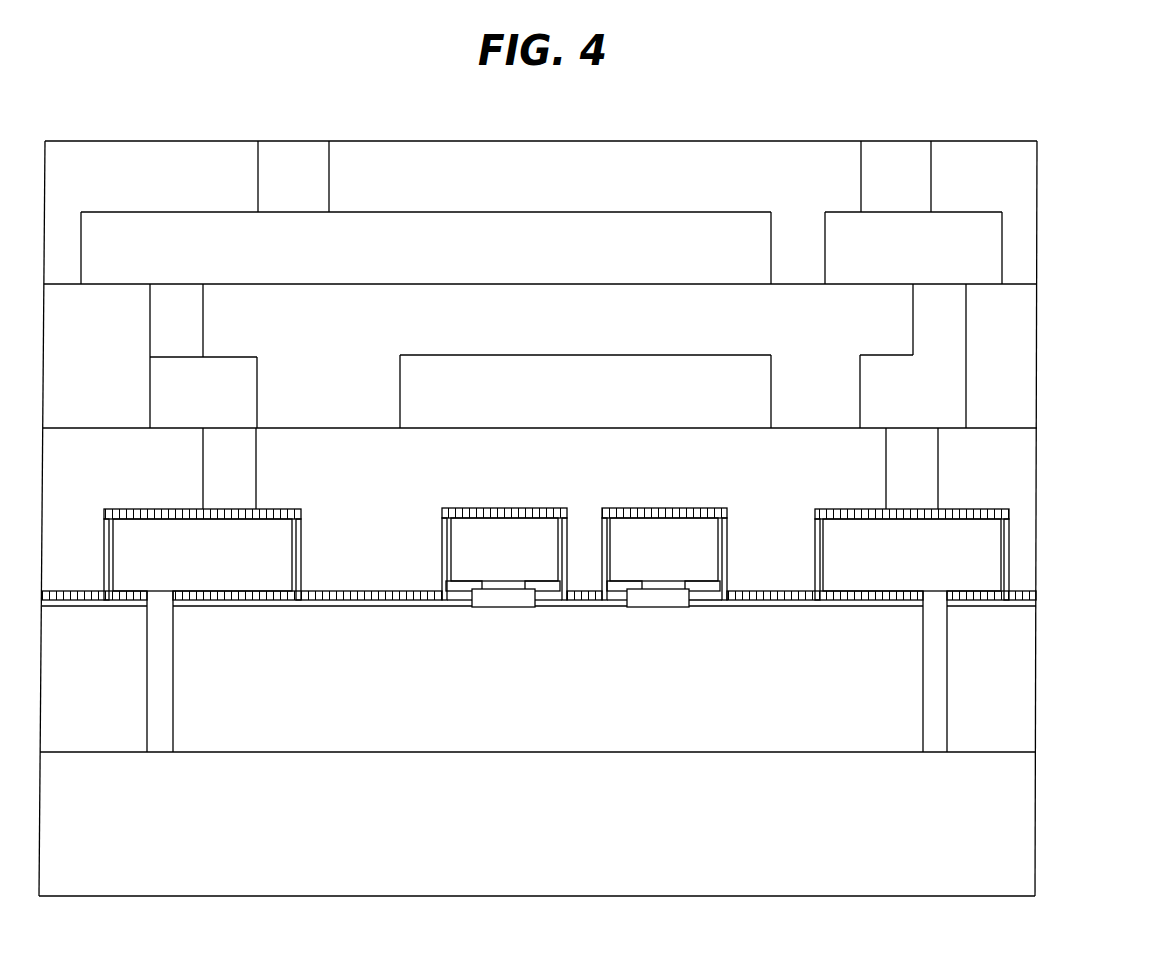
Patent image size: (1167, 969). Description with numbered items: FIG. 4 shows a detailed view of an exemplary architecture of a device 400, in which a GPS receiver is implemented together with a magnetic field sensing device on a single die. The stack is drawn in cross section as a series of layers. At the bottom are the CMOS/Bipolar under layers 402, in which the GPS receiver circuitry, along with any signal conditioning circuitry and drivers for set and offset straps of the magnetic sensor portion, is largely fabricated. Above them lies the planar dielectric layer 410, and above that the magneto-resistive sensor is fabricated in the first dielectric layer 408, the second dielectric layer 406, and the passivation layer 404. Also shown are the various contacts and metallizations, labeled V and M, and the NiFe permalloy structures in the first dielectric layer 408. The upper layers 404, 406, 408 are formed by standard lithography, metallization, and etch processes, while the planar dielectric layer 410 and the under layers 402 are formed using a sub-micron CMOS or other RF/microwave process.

The device 400 is at (1085, 97).
The CMOS/Bipolar under layers 402 is at (1048, 817).
The passivation layer 404 is at (1049, 206).
The second dielectric layer 406 is at (1050, 349).
The first dielectric layer 408 is at (1050, 506).
The planar dielectric layer 410 is at (1048, 673).